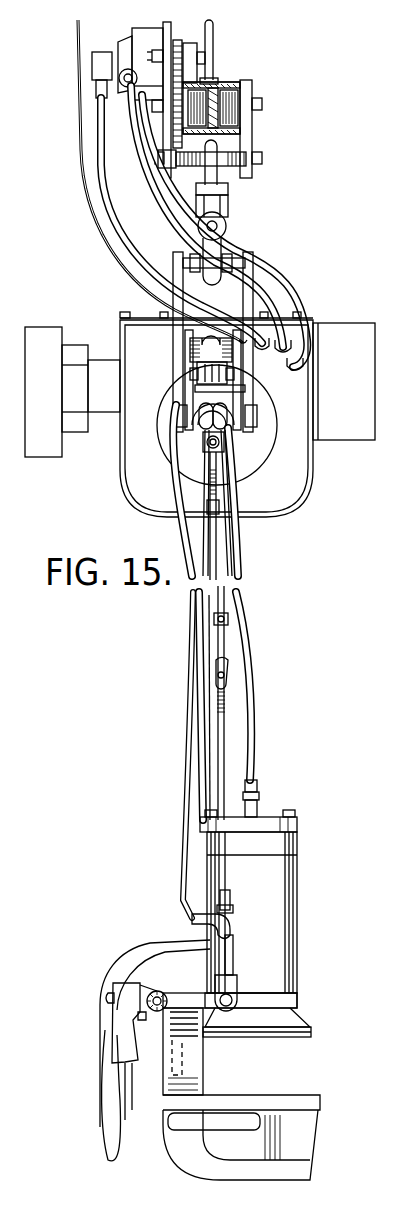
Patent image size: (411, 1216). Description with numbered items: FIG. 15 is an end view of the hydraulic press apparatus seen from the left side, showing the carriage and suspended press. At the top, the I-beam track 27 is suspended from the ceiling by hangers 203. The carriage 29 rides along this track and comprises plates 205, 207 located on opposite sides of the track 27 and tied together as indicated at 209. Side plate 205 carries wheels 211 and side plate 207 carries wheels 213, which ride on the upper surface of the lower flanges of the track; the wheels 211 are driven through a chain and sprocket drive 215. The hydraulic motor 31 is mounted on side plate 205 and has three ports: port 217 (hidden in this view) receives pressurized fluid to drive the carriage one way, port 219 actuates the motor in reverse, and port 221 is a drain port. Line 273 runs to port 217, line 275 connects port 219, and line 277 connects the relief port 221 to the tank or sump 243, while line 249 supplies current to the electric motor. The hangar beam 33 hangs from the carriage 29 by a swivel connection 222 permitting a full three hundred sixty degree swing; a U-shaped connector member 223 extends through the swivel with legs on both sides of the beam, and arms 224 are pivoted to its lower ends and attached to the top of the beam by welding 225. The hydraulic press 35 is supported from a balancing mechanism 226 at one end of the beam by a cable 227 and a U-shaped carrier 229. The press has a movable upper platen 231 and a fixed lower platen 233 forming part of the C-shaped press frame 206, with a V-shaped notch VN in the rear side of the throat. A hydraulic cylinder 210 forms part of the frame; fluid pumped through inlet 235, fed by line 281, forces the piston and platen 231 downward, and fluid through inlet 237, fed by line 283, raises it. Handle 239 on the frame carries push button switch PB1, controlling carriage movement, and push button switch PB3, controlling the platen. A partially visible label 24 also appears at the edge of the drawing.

The hydraulic motor 31 is at (140, 48).
The port 217 is at (120, 72).
The drain port 221 is at (113, 61).
The port 219 is at (124, 81).
The line 249 is at (112, 256).
The line 273 is at (302, 292).
The line 275 is at (280, 306).
The line 277 is at (298, 362).
The chain and sprocket drive 215 is at (190, 40).
The hangers 203 is at (214, 31).
The track 27 is at (220, 82).
The wheels 213 is at (230, 95).
The wheels 211 is at (197, 105).
The plate 207 is at (252, 130).
The carriage 29 is at (258, 141).
The tie 209 is at (222, 160).
The plate 205 is at (178, 182).
The swivel connection 222 is at (228, 205).
The tank or sump 243 is at (312, 462).
The U-shaped connector member 223 is at (176, 300).
The welding 225 is at (196, 350).
The arms 224 is at (238, 385).
The hangar beam 33 is at (200, 387).
The balancing mechanism 226 is at (224, 452).
The cable 227 is at (222, 590).
The U-shaped carrier 229 is at (217, 770).
The line 281 is at (248, 718).
The inlet 235 is at (260, 806).
The line 283 is at (193, 860).
The hydraulic press 35 is at (276, 909).
The hydraulic cylinder 210 is at (276, 950).
The upper platen 231 is at (310, 1034).
The inlet 237 is at (224, 930).
The press frame 206 is at (112, 970).
The handle 239 is at (117, 1034).
The push button switch PB1 is at (108, 997).
The push button switch PB3 is at (138, 1016).
The lower platen 233 is at (266, 1086).
The V-shaped notch VN is at (182, 1058).
The element 24 is at (410, 286).